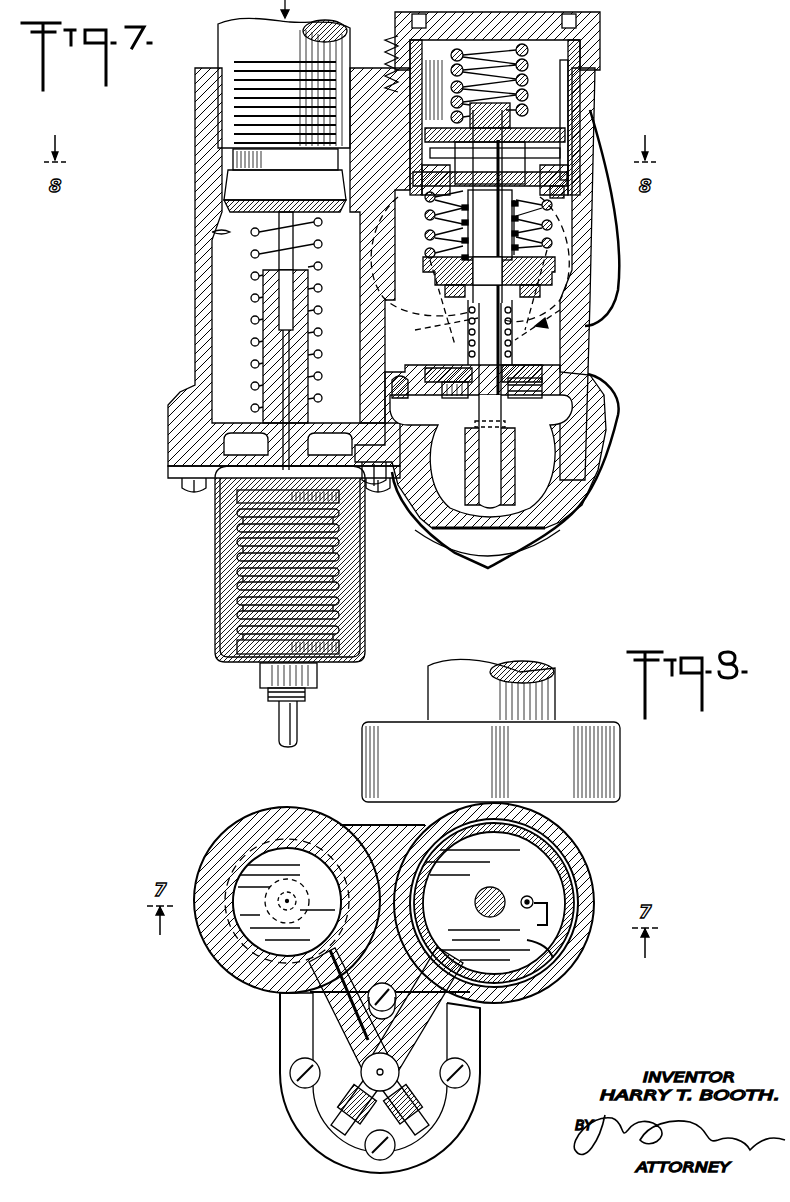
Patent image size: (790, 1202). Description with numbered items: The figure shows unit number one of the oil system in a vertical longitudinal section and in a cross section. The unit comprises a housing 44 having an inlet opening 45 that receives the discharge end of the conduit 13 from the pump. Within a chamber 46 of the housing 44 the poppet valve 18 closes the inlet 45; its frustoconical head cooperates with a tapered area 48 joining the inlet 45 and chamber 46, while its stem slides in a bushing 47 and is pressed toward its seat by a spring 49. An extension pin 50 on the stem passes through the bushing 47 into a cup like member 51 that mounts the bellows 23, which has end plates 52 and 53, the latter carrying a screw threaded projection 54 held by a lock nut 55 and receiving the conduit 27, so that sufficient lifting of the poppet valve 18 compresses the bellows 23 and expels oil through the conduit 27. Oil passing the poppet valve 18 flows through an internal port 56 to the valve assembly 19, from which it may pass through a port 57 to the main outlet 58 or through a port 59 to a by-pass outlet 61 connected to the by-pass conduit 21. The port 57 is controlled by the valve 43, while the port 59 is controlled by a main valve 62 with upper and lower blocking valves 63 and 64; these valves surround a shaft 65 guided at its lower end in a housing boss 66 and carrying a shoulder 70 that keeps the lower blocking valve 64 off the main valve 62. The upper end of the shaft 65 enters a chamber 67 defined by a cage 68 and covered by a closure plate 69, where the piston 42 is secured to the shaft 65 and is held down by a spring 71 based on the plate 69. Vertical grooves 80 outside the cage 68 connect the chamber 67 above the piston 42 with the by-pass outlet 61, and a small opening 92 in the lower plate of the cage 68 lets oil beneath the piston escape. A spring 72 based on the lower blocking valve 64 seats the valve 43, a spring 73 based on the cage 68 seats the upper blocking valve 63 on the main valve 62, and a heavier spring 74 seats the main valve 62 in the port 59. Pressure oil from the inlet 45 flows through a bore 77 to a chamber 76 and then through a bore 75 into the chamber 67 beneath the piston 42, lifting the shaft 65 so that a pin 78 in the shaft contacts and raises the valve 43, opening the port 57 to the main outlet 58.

In FIG. 7, the conduit 13 is at (240, 36).
In FIG. 7, the poppet valve 18 is at (282, 208).
In FIG. 8, the poppet valve 18 is at (250, 918).
In FIG. 7, the valve assembly 19 is at (590, 334).
In FIG. 8, the by-pass conduit 21 is at (472, 676).
In FIG. 7, the bellows 23 is at (240, 575).
In FIG. 7, the conduit 27 is at (280, 726).
In FIG. 7, the piston 42 is at (592, 132).
In FIG. 7, the valve 43 is at (450, 372).
In FIG. 7, the housing 44 is at (200, 222).
In FIG. 8, the housing 44 is at (592, 828).
In FIG. 7, the inlet opening 45 is at (246, 182).
In FIG. 8, the inlet opening 45 is at (270, 852).
In FIG. 7, the chamber 46 is at (222, 268).
In FIG. 7, the bushing 47 is at (212, 428).
In FIG. 7, the tapered area 48 is at (215, 236).
In FIG. 7, the spring 49 is at (252, 340).
In FIG. 7, the extension pin 50 is at (276, 458).
In FIG. 7, the cup like member 51 is at (218, 540).
In FIG. 7, the end plate 52 is at (236, 497).
In FIG. 7, the end plate 53 is at (240, 646).
In FIG. 7, the screw threaded projection 54 is at (270, 699).
In FIG. 7, the lock nut 55 is at (261, 675).
In FIG. 7, the internal port 56 is at (403, 398).
In FIG. 7, the port 57 is at (452, 400).
In FIG. 7, the main outlet 58 is at (565, 478).
In FIG. 7, the port 59 is at (595, 288).
In FIG. 7, the by-pass outlet 61 is at (548, 241).
In FIG. 7, the main valve 62 is at (440, 248).
In FIG. 7, the upper blocking valve 63 is at (448, 232).
In FIG. 7, the lower blocking valve 64 is at (446, 298).
In FIG. 7, the shaft 65 is at (500, 430).
In FIG. 8, the shaft 65 is at (492, 886).
In FIG. 7, the housing boss 66 is at (468, 497).
In FIG. 7, the chamber 67 is at (575, 84).
In FIG. 8, the chamber 67 is at (560, 962).
In FIG. 7, the cage 68 is at (570, 104).
In FIG. 8, the cage 68 is at (575, 946).
In FIG. 7, the closure plate 69 is at (540, 34).
In FIG. 7, the shoulder 70 is at (490, 300).
In FIG. 7, the spring 71 is at (482, 50).
In FIG. 7, the spring 72 is at (522, 334).
In FIG. 7, the spring 73 is at (548, 252).
In FIG. 7, the spring 74 is at (556, 222).
In FIG. 8, the bore 75 is at (437, 1014).
In FIG. 8, the chamber 76 is at (375, 1090).
In FIG. 8, the bore 77 is at (345, 1000).
In FIG. 7, the pin 78 is at (465, 435).
In FIG. 7, the vertical grooves 80 is at (572, 153).
In FIG. 8, the vertical grooves 80 is at (528, 988).
In FIG. 7, the small opening 92 is at (566, 190).
In FIG. 8, the small opening 92 is at (533, 900).